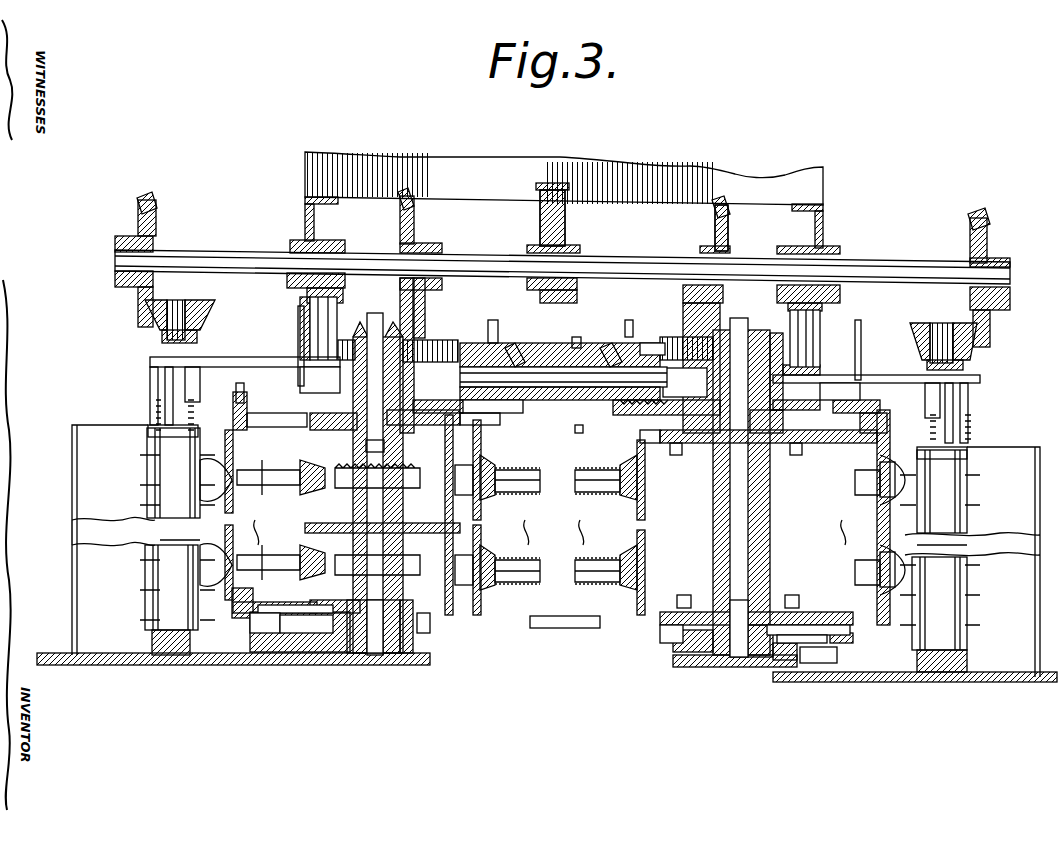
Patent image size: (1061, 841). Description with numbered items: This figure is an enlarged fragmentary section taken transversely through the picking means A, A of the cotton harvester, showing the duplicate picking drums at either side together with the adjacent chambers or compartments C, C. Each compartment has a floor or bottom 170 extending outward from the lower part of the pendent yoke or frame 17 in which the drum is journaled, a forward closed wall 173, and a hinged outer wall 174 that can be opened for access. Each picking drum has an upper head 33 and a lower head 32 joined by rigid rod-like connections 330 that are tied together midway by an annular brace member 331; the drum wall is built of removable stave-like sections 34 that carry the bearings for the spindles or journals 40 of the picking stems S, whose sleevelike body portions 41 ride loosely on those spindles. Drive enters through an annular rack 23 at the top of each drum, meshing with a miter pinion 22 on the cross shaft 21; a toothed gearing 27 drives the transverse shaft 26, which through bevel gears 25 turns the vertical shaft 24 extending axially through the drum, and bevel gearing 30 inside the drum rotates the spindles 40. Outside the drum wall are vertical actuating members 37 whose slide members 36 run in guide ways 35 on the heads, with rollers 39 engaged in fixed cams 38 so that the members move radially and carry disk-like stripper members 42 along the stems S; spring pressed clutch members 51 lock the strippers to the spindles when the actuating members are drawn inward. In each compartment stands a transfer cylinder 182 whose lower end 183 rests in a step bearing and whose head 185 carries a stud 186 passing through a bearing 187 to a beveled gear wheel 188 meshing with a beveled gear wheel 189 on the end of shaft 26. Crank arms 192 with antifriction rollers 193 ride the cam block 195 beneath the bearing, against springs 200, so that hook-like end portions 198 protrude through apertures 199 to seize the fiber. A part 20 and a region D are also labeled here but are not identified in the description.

The pendent yokes or frames 17 is at (300, 360).
The shaft 20 is at (577, 337).
The cross shaft 21 is at (650, 345).
The miter pinions 22 is at (512, 343).
The annular gear members or racks 23 is at (580, 435).
The vertical shafts 24 is at (376, 325).
The bevel gears 25 is at (730, 250).
The transverse shaft 26 is at (484, 252).
The toothed gearing 27 is at (568, 230).
The bevel gearing 30 is at (405, 466).
The lower head or member 32 is at (430, 660).
The upper head or member 33 is at (765, 470).
The stave-like sections or members 34 is at (812, 585).
The guide ways 35 is at (300, 395).
The slide members 36 is at (250, 652).
The actuating members 37 is at (232, 420).
The fixed cams 38 is at (690, 652).
The rollers 39 is at (845, 383).
The journals or spindles 40 is at (300, 440).
The sleevelike body portions 41 is at (280, 470).
The stripper members 42 is at (235, 620).
The spring pressed clutch members 51 is at (512, 458).
The floors or bottoms 170 is at (118, 667).
The closed wall 173 is at (554, 597).
The outer walls 174 is at (70, 562).
The drum or cylinder 182 is at (146, 450).
The lower ends 183 is at (150, 635).
The heads 185 is at (150, 432).
The studs or stems 186 is at (188, 300).
The bearings 187 is at (228, 357).
The beveled gear wheels 188 is at (205, 312).
The beveled gear wheels 189 is at (156, 222).
The crank arms 192 is at (154, 405).
The antifriction rollers 193 is at (156, 385).
The cam block or member 195 is at (158, 368).
The hook-like end portions 198 is at (148, 486).
The apertures 199 is at (168, 545).
The springs 200 is at (148, 412).
The rigid connections 330 is at (800, 572).
The annular brace members 331 is at (390, 460).
The picking means A is at (335, 700).
The chambers or compartments C is at (78, 430).
The tank compartment D is at (145, 614).
The picking stems or members S is at (550, 530).